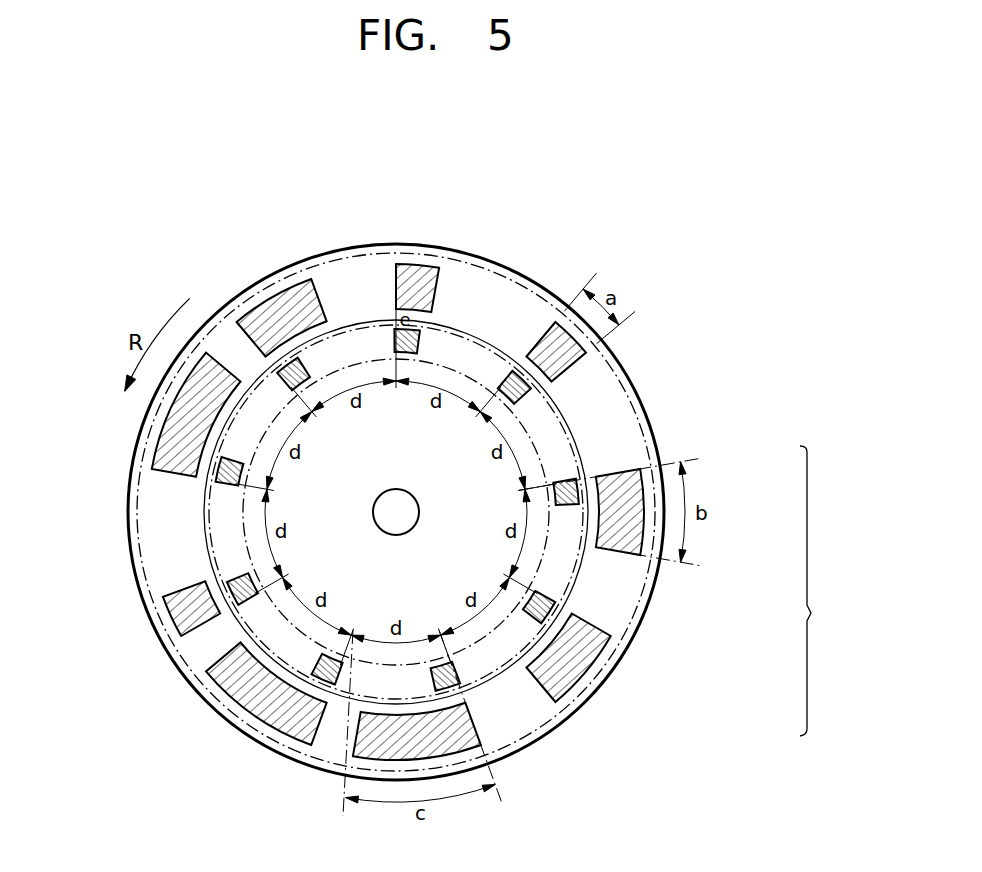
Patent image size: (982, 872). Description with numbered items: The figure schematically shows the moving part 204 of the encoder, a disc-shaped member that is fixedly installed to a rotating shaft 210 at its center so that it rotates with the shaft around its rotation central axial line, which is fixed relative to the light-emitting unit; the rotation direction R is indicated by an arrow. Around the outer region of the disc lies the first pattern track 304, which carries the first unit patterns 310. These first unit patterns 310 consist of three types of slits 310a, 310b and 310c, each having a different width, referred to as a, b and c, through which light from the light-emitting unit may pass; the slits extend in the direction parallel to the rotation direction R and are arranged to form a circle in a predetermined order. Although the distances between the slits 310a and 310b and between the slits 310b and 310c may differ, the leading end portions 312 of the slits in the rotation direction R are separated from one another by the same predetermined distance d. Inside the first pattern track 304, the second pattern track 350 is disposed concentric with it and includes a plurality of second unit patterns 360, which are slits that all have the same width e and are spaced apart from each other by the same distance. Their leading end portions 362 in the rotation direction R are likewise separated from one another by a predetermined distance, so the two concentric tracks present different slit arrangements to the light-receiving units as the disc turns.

The moving part 204 is at (515, 270).
The first pattern track 304 is at (325, 260).
The first unit patterns 310 is at (827, 591).
The slit 310a is at (427, 270).
The slit 310b is at (275, 305).
The slit 310c is at (165, 449).
The leading end portions 312 is at (390, 278).
The second pattern track 350 is at (210, 548).
The second unit patterns 360 is at (224, 480).
The leading end portions 362 is at (285, 366).
The rotating shaft 210 is at (412, 527).